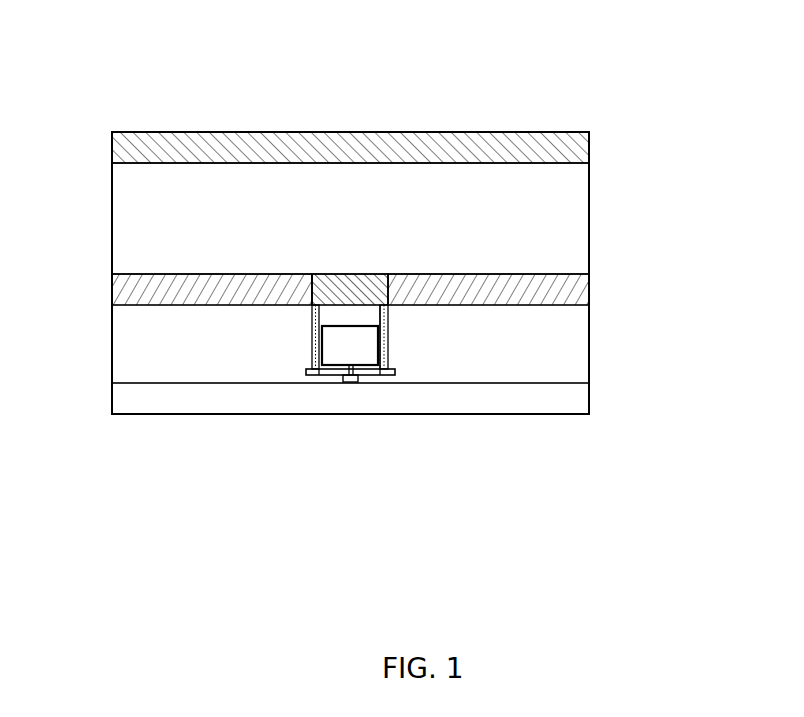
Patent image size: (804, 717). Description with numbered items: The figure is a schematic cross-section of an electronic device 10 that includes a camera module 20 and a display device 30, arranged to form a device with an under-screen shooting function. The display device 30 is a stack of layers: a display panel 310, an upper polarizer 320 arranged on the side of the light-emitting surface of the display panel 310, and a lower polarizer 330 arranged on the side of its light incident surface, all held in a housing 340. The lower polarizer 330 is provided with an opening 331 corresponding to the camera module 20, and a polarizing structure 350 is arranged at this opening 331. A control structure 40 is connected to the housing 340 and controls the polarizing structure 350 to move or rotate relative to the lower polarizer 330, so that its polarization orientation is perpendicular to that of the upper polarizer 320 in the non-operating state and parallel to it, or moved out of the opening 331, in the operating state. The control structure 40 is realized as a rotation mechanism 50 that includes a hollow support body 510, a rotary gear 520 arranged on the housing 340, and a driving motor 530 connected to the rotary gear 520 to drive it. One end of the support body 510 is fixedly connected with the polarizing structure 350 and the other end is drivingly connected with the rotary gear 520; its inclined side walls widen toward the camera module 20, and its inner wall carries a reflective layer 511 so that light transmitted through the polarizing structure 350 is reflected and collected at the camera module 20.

The electronic device 10 is at (113, 58).
The camera module 20 is at (355, 343).
The display device 30 is at (440, 273).
The display panel 310 is at (568, 217).
The upper polarizer 320 is at (563, 148).
The lower polarizer 330 is at (565, 287).
The opening 331 is at (311, 301).
The housing 340 is at (403, 398).
The polarizing structure 350 is at (396, 276).
The control structure 40 is at (341, 414).
The rotation mechanism 50 is at (341, 386).
The support body 510 is at (313, 338).
The reflective layer 511 is at (383, 343).
The rotary gear 520 is at (332, 371).
The driving motor 530 is at (356, 416).